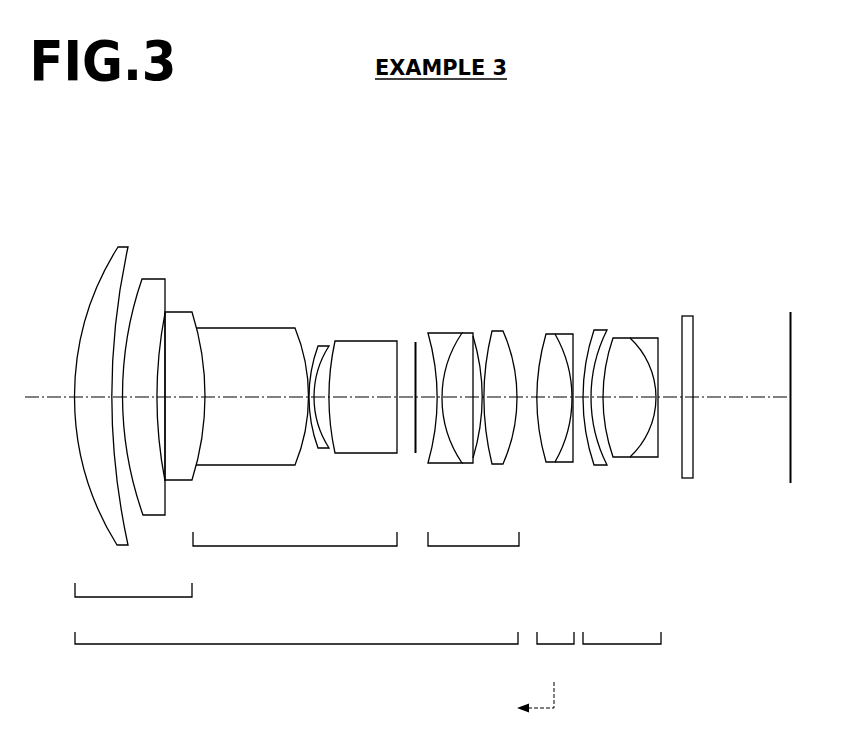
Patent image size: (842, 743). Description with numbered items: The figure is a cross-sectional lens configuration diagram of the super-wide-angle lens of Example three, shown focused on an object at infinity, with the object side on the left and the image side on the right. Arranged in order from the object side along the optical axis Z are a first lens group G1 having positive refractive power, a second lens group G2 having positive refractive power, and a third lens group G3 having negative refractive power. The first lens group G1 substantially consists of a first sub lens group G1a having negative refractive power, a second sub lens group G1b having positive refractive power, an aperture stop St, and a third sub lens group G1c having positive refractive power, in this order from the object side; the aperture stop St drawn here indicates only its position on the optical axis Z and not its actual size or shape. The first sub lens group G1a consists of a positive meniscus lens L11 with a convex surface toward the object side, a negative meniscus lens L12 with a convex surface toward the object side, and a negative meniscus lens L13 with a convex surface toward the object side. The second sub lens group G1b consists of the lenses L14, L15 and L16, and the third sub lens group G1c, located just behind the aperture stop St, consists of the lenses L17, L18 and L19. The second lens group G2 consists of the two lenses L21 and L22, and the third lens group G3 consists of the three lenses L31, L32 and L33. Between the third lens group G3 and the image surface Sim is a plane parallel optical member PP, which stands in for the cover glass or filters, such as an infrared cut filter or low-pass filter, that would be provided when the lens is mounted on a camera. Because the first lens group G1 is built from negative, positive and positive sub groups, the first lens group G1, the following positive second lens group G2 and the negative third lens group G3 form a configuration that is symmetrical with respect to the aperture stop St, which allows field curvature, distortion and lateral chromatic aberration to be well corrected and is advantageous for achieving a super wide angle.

The positive meniscus lens L11 is at (123, 257).
The negative meniscus lens L12 is at (152, 284).
The negative meniscus lens L13 is at (178, 322).
The lens L14 is at (247, 328).
The lens L15 is at (322, 345).
The lens L16 is at (367, 343).
The aperture stop St is at (414, 345).
The lens L17 is at (445, 338).
The lens L18 is at (465, 340).
The lens L19 is at (498, 335).
The lens L21 is at (550, 334).
The lens L22 is at (565, 334).
The lens L31 is at (602, 331).
The lens L32 is at (623, 342).
The lens L33 is at (648, 342).
The plane parallel optical member PP is at (687, 318).
The image surface Sim is at (792, 338).
The optical axis Z is at (45, 398).
The first lens group G1 is at (296, 652).
The first sub lens group G1a is at (133, 604).
The second sub lens group G1b is at (295, 553).
The third sub lens group G1c is at (473, 553).
The second lens group G2 is at (555, 653).
The third lens group G3 is at (622, 653).